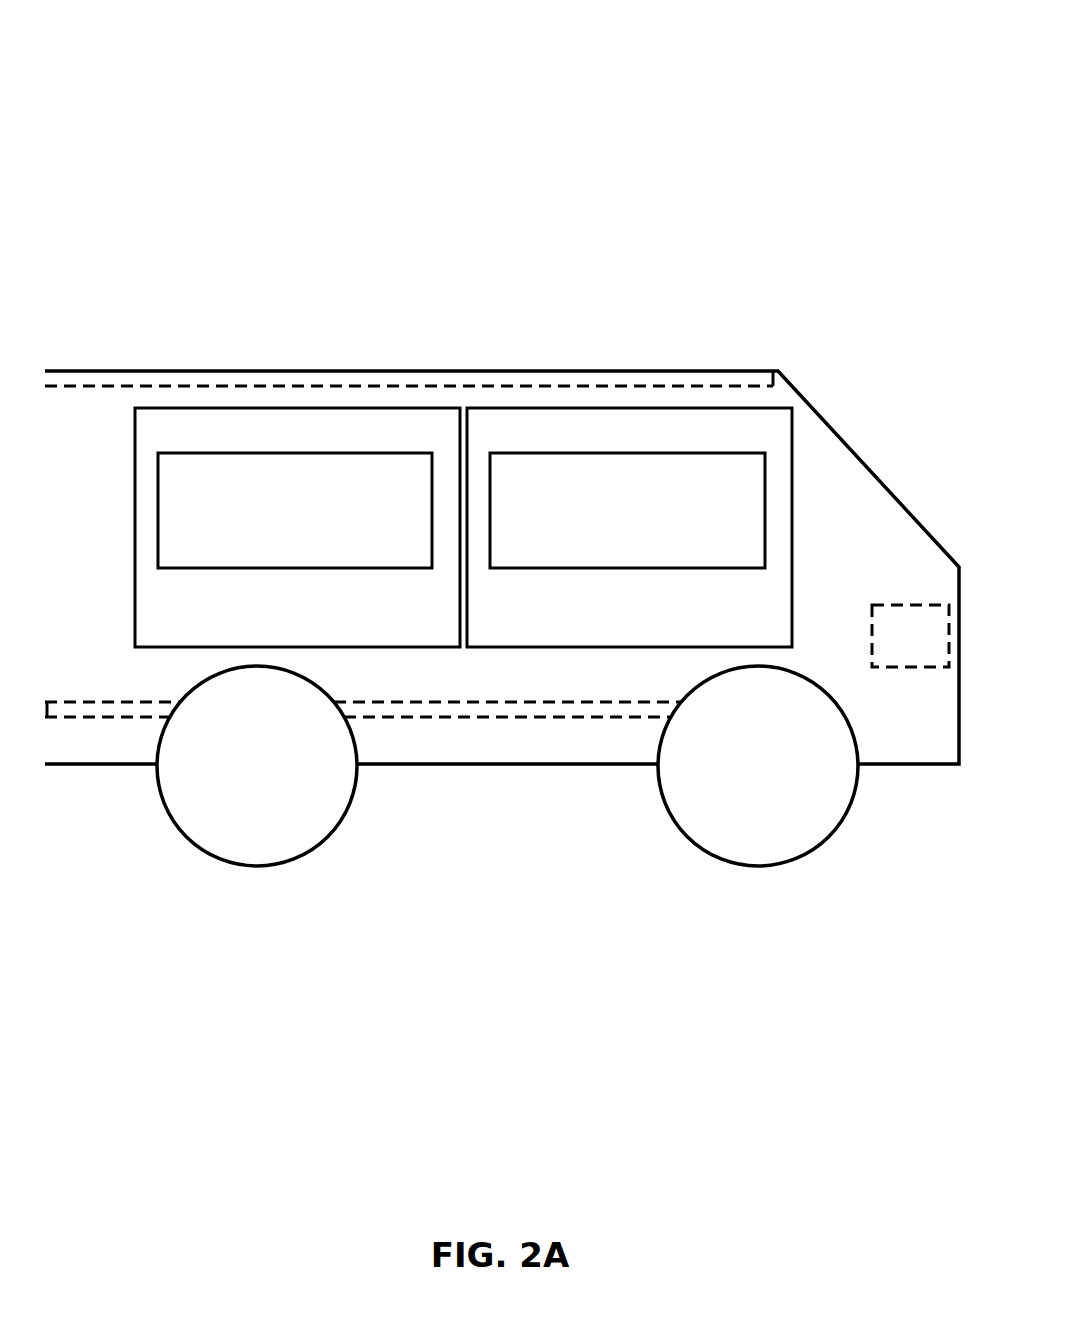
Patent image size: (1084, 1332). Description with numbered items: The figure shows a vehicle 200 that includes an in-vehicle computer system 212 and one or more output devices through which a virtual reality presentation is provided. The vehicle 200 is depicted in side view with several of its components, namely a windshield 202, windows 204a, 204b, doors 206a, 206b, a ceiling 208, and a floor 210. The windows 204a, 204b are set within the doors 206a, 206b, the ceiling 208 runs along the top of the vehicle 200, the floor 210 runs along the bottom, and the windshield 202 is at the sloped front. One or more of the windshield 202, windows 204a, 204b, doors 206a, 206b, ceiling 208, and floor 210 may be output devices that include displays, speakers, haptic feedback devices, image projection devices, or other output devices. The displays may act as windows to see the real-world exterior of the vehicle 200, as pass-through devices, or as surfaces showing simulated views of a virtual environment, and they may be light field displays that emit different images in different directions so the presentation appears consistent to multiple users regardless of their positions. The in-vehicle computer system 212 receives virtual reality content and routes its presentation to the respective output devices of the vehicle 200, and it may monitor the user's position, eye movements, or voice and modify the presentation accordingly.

The vehicle 200 is at (678, 52).
The windshield 202 is at (870, 468).
The window 204a is at (601, 523).
The window 204b is at (268, 523).
The door 206a is at (793, 587).
The door 206b is at (133, 590).
The ceiling 208 is at (357, 377).
The floor 210 is at (468, 712).
The in-vehicle computer system 212 is at (891, 647).